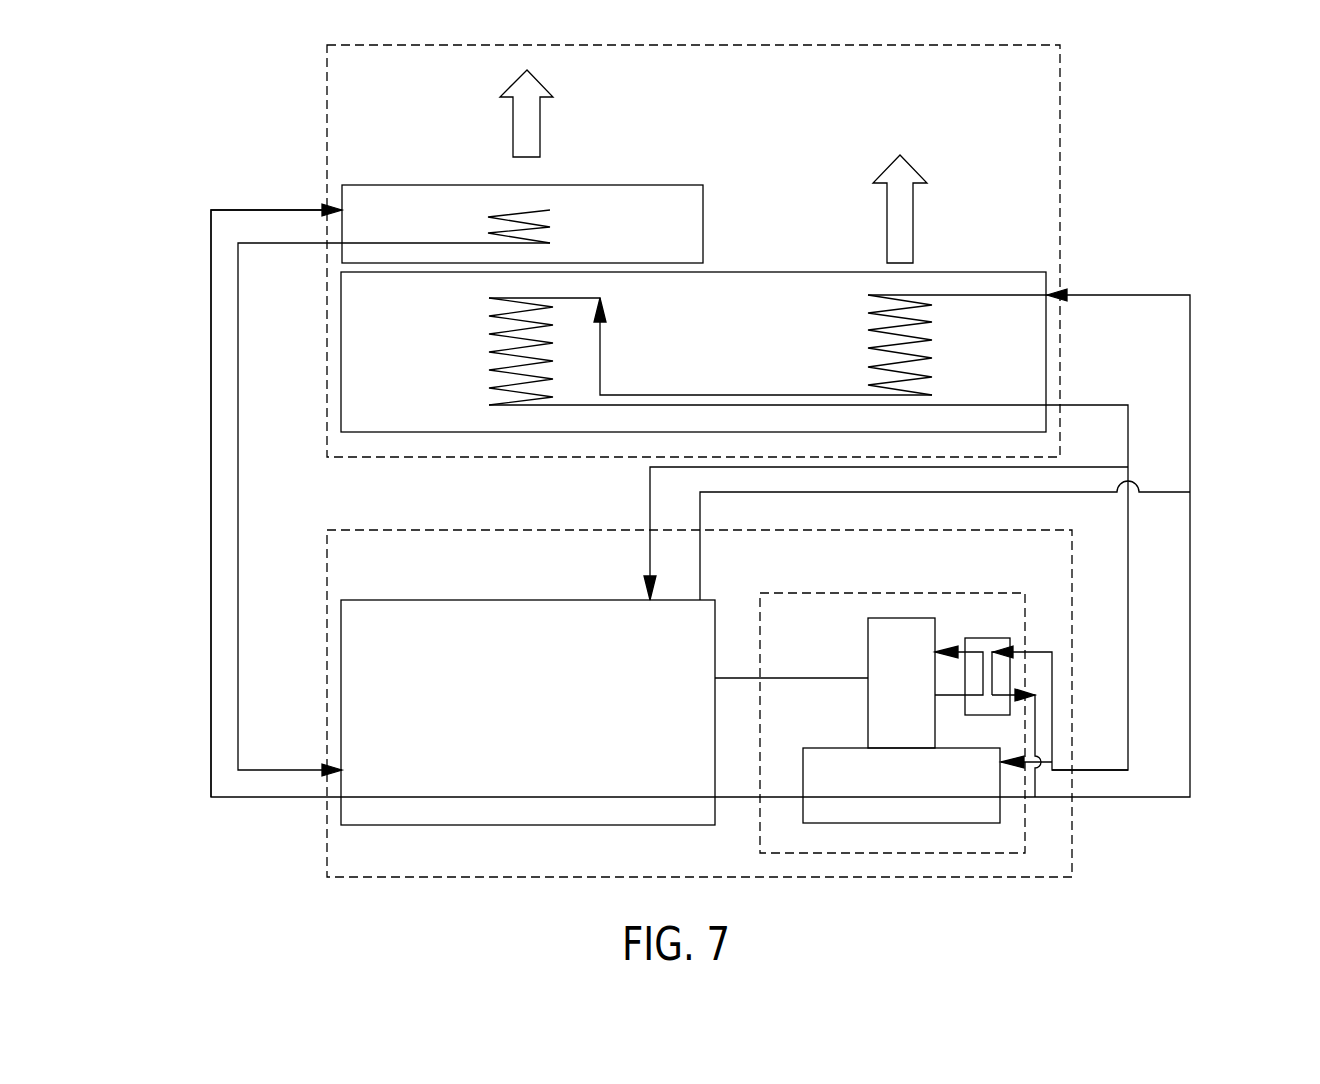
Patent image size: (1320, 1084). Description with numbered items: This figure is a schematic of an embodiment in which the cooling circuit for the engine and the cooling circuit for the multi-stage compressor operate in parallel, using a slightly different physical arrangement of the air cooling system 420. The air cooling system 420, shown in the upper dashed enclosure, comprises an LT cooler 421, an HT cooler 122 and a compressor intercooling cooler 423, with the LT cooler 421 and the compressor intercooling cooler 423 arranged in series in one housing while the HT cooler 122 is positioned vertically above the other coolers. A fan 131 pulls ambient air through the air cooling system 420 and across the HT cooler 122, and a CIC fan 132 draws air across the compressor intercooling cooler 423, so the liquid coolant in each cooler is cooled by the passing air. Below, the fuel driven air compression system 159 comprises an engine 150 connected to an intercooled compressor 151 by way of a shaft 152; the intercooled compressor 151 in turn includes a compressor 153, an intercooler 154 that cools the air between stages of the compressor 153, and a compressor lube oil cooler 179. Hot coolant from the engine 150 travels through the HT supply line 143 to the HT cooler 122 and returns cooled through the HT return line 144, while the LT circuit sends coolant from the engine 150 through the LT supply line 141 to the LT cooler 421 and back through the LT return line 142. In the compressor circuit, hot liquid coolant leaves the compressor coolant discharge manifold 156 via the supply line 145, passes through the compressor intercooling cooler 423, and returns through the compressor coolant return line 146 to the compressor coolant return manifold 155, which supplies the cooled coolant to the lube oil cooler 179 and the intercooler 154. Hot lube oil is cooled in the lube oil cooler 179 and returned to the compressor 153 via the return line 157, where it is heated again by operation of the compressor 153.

The air cooling system 420 is at (1065, 150).
The fan 131 is at (540, 140).
The CIC fan 132 is at (885, 232).
The HT cooler 122 is at (555, 223).
The compressor intercooling cooler 423 is at (489, 350).
The LT cooler 421 is at (868, 350).
The supply line 145 is at (1192, 608).
The HT supply line 143 is at (211, 468).
The HT return line 144 is at (238, 388).
The compressor coolant return line 146 is at (1130, 568).
The LT return line 142 is at (648, 510).
The LT supply line 141 is at (703, 570).
The fuel driven air compression system 159 is at (490, 528).
The engine 150 is at (465, 598).
The intercooled compressor 151 is at (838, 592).
The shaft 152 is at (810, 675).
The compressor 153 is at (868, 705).
The intercooler 154 is at (893, 825).
The return line 157 is at (958, 640).
The compressor lube oil cooler 179 is at (980, 630).
The compressor coolant return manifold 155 is at (1053, 695).
The compressor coolant discharge manifold 156 is at (1037, 742).